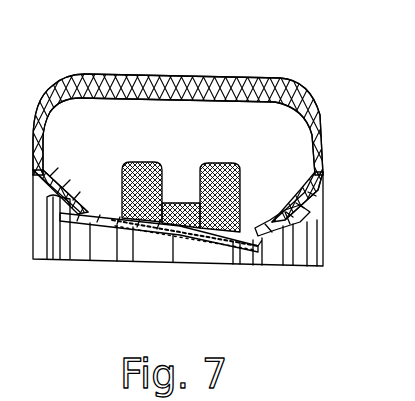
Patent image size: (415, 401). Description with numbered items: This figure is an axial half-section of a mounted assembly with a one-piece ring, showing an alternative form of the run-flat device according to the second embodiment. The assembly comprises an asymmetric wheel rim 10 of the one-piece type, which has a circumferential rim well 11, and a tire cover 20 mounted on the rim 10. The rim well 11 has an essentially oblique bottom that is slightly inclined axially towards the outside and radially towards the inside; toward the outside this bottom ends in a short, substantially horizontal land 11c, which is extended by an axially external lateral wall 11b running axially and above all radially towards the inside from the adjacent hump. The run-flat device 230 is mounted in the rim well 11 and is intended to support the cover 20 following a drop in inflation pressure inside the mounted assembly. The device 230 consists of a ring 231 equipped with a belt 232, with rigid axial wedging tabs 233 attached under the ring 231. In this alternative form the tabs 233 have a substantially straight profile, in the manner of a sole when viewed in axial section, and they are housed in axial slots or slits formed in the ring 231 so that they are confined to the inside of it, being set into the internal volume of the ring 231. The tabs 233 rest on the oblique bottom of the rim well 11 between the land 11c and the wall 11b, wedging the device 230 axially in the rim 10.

The tire cover 20 is at (268, 80).
The run-flat device 230 is at (214, 131).
The ring 231 is at (138, 161).
The belt 232 is at (175, 202).
The rigid axial wedging tabs 233 is at (182, 240).
The wheel rim 10 is at (90, 229).
The rim well 11 is at (148, 232).
The axially external lateral wall 11b is at (262, 238).
The land 11c is at (234, 252).